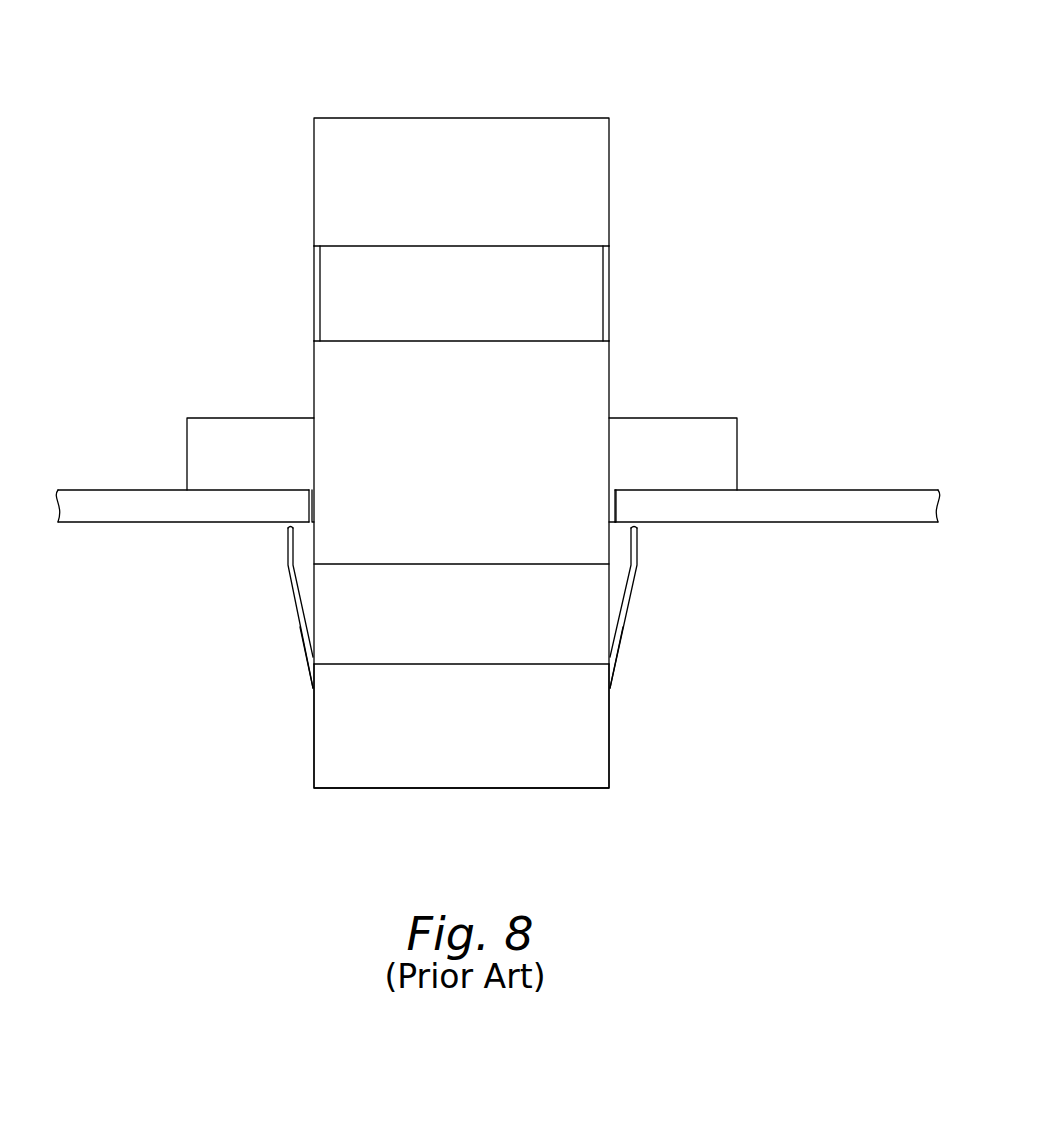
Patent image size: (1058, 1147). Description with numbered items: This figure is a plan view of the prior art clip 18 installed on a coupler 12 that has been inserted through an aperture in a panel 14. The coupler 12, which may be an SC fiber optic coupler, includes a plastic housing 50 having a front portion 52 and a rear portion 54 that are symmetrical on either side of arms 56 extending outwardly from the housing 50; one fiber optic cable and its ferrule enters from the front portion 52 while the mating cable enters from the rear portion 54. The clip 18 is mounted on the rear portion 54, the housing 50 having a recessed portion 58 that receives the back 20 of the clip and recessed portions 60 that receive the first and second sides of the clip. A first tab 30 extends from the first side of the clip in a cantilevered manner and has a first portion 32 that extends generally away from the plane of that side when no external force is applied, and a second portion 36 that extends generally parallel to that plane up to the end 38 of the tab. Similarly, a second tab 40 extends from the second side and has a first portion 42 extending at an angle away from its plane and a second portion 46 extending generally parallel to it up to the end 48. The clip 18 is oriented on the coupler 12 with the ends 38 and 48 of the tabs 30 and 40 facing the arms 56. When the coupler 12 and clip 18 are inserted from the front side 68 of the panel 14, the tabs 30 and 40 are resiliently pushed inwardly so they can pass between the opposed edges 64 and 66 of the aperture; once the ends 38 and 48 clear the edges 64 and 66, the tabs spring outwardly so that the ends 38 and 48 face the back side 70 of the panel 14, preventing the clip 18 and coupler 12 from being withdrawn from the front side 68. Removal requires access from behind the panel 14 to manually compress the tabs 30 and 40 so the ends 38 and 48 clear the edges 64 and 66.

The coupler 12 is at (393, 116).
The panel 14 is at (120, 510).
The clip 18 is at (491, 664).
The back 20 is at (479, 635).
The first tab 30 is at (632, 606).
The first portion 32 is at (621, 655).
The second portion 36 is at (635, 550).
The end 38 is at (636, 527).
The second tab 40 is at (292, 594).
The first portion 42 is at (307, 643).
The second portion 46 is at (297, 546).
The end 48 is at (289, 527).
The plastic housing 50 is at (764, 137).
The front portion 52 is at (314, 195).
The rear portion 54 is at (314, 742).
The arms 56 is at (187, 453).
The recessed portion 58 is at (479, 311).
The recessed portions 60 is at (314, 298).
The opposed edge 64 is at (316, 505).
The opposed edge 66 is at (609, 503).
The front side 68 is at (83, 490).
The back side 70 is at (133, 522).